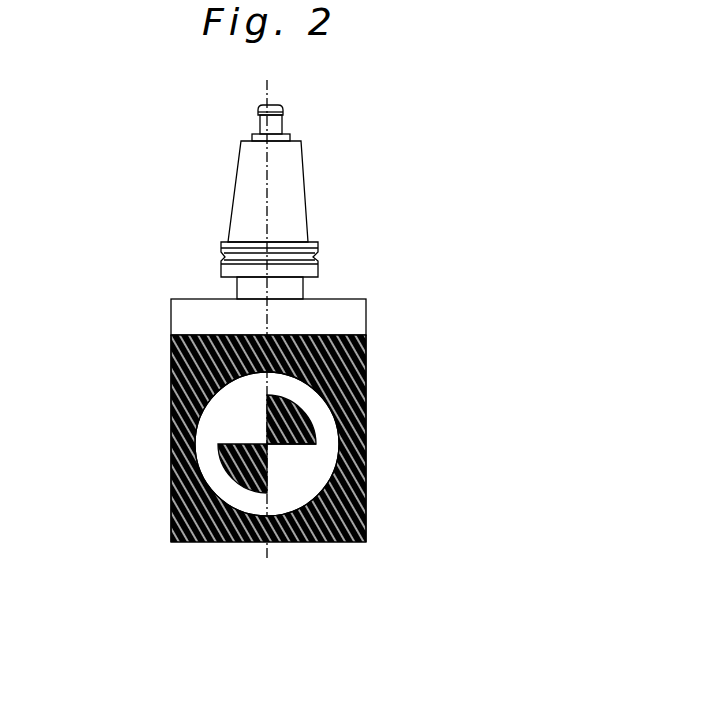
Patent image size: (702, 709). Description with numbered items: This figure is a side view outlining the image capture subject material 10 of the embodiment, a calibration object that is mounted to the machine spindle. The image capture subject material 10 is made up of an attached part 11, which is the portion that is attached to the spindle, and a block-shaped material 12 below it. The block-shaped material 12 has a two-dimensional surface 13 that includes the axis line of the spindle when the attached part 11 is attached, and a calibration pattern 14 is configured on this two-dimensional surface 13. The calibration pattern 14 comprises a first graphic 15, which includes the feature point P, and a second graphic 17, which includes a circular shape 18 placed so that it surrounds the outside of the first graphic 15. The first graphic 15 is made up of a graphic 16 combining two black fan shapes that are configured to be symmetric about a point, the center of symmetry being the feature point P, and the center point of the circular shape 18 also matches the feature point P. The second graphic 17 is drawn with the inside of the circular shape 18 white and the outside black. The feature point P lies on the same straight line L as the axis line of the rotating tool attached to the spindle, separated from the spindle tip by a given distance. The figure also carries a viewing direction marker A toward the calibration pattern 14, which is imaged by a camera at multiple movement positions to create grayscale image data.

The image capture subject material 10 is at (121, 183).
The attached part 11 is at (298, 206).
The block-shaped material 12 is at (360, 320).
The two-dimensional surface 13 is at (347, 377).
The calibration pattern 14 is at (158, 372).
The first graphic 15 is at (332, 440).
The graphic 16 is at (316, 417).
The second graphic 17 is at (378, 509).
The circular shape 18 is at (327, 471).
The feature point P is at (262, 440).
The viewing direction A is at (510, 422).
The straight line L is at (222, 305).